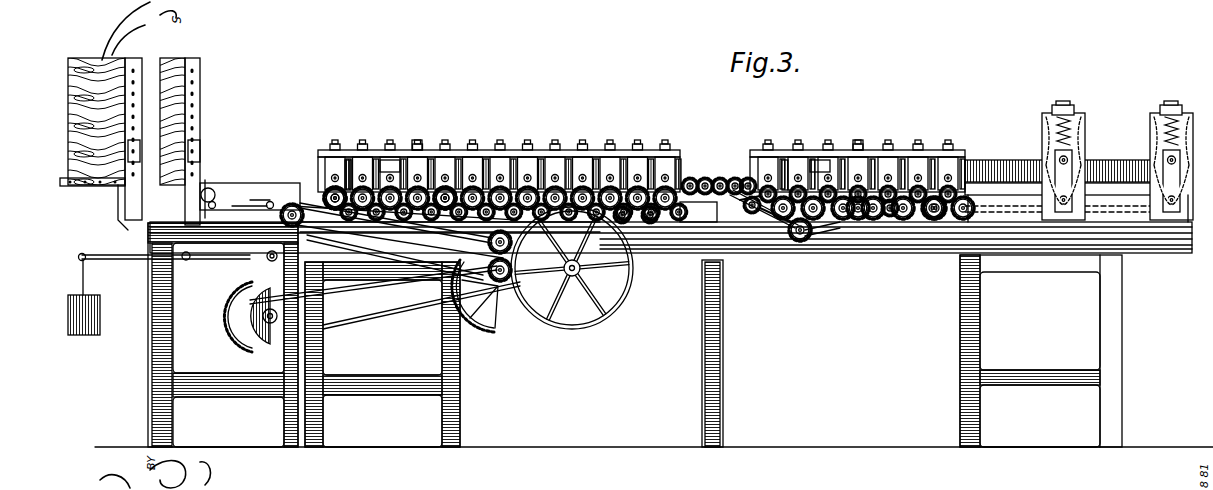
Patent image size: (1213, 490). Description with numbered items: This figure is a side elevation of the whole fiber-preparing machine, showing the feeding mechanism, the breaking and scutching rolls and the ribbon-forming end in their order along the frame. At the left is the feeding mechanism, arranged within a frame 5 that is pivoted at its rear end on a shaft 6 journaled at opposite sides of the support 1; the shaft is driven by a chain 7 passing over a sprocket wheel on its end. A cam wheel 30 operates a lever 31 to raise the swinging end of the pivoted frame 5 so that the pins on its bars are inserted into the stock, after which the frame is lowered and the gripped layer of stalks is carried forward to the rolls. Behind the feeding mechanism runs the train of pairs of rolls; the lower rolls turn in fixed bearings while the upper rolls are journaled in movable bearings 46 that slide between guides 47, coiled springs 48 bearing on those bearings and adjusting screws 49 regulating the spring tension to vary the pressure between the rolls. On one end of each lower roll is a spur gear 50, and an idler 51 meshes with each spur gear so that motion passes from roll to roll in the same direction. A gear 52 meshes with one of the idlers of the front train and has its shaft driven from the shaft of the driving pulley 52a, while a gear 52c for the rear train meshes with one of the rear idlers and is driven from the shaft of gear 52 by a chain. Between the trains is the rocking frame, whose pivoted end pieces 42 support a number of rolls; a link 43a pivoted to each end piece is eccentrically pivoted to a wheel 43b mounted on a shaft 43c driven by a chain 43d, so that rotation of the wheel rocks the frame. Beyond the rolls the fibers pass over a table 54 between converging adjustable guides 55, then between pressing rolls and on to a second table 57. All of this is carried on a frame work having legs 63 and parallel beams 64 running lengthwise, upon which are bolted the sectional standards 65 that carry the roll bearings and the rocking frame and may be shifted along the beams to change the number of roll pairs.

The support 1 is at (215, 240).
The frame 5 is at (242, 200).
The shaft 6 is at (287, 210).
The chain 7 is at (404, 232).
The cam wheel 30 is at (262, 318).
The lever 31 is at (228, 247).
The end pieces 42 is at (745, 188).
The link 43a is at (755, 160).
The wheel 43b is at (735, 215).
The shaft 43c is at (712, 220).
The chain 43d is at (768, 232).
The movable bearings 46 is at (338, 178).
The guides 47 is at (352, 165).
The coiled springs 48 is at (388, 165).
The adjusting screws 49 is at (415, 148).
The spur gear 50 is at (330, 194).
The idler 51 is at (360, 232).
The gear 52 is at (490, 240).
The driving pulley 52a is at (568, 329).
The gear 52c is at (800, 243).
The table 54 is at (1000, 185).
The converging adjustable guides 55 is at (1022, 172).
The second table 57 is at (935, 220).
The legs 63 is at (460, 390).
The parallel beams 64 is at (407, 240).
The standards 65 is at (676, 222).